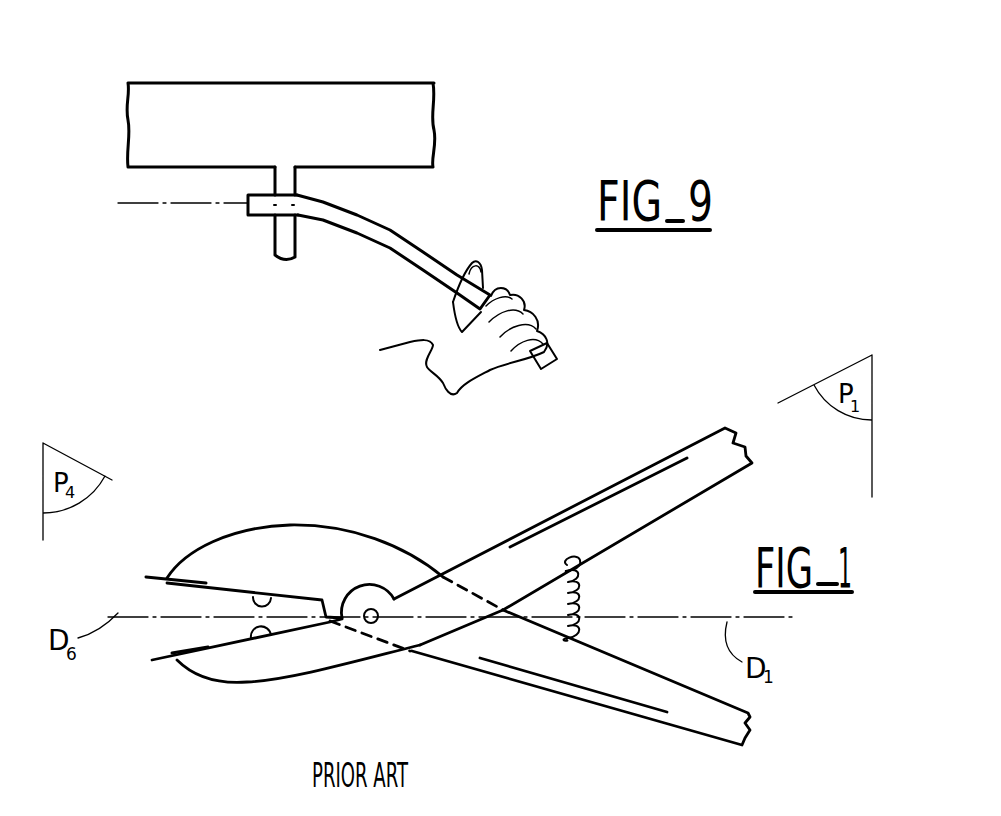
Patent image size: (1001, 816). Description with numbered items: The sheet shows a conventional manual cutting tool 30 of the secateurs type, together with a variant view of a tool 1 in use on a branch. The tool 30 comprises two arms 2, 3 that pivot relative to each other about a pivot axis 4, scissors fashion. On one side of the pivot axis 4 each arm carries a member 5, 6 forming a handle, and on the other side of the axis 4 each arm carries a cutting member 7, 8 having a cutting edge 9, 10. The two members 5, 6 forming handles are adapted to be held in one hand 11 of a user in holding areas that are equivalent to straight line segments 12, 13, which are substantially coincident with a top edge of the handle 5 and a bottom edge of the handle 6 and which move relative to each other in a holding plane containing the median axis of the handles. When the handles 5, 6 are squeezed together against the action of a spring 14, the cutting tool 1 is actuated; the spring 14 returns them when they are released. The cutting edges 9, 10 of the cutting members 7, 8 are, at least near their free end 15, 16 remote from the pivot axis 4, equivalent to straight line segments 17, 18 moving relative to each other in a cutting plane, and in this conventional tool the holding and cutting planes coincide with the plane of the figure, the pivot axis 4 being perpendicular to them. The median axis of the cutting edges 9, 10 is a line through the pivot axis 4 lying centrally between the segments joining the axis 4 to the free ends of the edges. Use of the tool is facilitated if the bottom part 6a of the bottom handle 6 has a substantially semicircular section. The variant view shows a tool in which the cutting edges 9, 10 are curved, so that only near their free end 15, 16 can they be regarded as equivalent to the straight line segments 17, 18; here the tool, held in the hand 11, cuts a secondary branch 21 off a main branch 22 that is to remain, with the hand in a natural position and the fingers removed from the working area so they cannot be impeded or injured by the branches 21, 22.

In FIG. 9, the cutting tool 1 is at (331, 244).
In FIG. 1, the arm 2 is at (573, 503).
In FIG. 1, the arm 3 is at (581, 701).
In FIG. 1, the pivot axis 4 is at (372, 624).
In FIG. 1, the member forming a handle 5 is at (706, 458).
In FIG. 1, the member forming a handle 6 is at (722, 722).
In FIG. 1, the bottom part of the bottom handle 6a is at (618, 712).
In FIG. 9, the cutting member 7 is at (393, 252).
In FIG. 1, the cutting member 7 is at (428, 554).
In FIG. 9, the cutting member 8 is at (320, 212).
In FIG. 1, the cutting member 8 is at (414, 617).
In FIG. 1, the cutting edge 9 is at (271, 637).
In FIG. 1, the cutting edge 10 is at (280, 595).
In FIG. 9, the hand 11 is at (410, 342).
In FIG. 1, the straight line segment 12 is at (582, 507).
In FIG. 1, the straight line segment 13 is at (553, 677).
In FIG. 1, the spring 14 is at (582, 590).
In FIG. 9, the free end 15 is at (232, 245).
In FIG. 1, the free end 15 is at (193, 592).
In FIG. 9, the free end 16 is at (257, 218).
In FIG. 1, the free end 16 is at (210, 637).
In FIG. 9, the straight line segment 17 is at (159, 240).
In FIG. 1, the straight line segment 17 is at (167, 660).
In FIG. 9, the straight line segment 18 is at (160, 207).
In FIG. 1, the straight line segment 18 is at (155, 577).
In FIG. 9, the secondary branch 21 is at (283, 244).
In FIG. 9, the main branch 22 is at (328, 106).
In FIG. 1, the manual cutting tool 30 is at (257, 527).